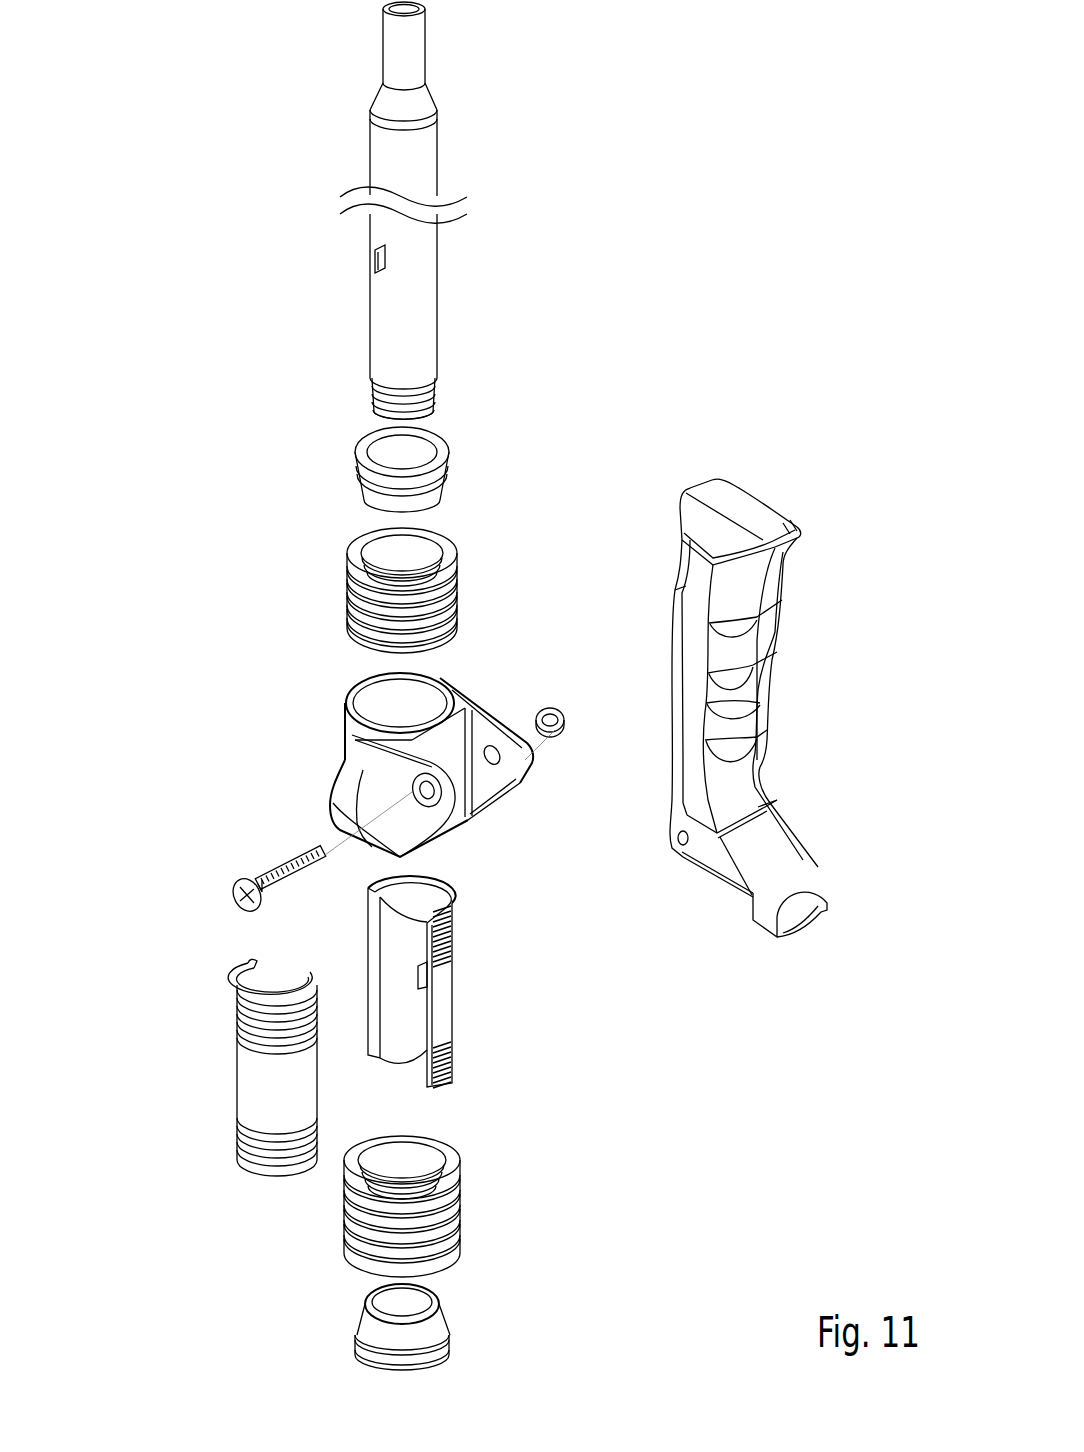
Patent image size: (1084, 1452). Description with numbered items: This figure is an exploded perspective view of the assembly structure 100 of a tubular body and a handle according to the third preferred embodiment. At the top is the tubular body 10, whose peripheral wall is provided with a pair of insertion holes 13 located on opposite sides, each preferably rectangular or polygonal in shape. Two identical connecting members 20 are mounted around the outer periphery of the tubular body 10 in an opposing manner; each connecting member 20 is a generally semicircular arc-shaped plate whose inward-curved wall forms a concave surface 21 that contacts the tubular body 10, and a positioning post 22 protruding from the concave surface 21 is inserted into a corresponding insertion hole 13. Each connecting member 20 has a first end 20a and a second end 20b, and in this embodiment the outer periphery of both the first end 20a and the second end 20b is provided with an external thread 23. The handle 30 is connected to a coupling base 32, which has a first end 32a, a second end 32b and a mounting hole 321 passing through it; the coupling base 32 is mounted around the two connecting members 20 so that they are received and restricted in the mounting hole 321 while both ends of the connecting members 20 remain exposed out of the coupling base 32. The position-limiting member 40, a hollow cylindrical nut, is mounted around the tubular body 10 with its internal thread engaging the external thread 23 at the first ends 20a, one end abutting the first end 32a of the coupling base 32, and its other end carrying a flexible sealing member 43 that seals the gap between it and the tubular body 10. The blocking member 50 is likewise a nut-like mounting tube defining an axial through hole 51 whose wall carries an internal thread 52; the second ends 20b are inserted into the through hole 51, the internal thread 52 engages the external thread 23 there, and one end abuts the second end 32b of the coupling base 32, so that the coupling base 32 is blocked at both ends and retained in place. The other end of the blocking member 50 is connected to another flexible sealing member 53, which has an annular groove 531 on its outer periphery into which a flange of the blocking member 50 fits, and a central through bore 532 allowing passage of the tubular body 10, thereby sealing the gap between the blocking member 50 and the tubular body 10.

The tubular body 10 is at (445, 148).
The insertion hole 13 is at (375, 262).
The assembly structure 100 is at (549, 400).
The flexible sealing member 43 is at (358, 446).
The position-limiting member 40 is at (332, 590).
The coupling base 32 is at (335, 785).
The mounting hole 321 is at (385, 705).
The first end 32a is at (448, 672).
The second end 32b is at (335, 833).
The handle 30 is at (810, 626).
The concave surface 21 is at (415, 900).
The positioning post 22 is at (418, 975).
The connecting member 20 is at (222, 1072).
The first end 20a is at (237, 966).
The second end 20b is at (272, 1165).
The external thread 23 is at (240, 1015).
The blocking member 50 is at (480, 1212).
The through hole 51 is at (413, 1137).
The internal thread 52 is at (452, 1166).
The flexible sealing member 53 is at (447, 1307).
The through bore 532 is at (400, 1315).
The annular groove 531 is at (450, 1340).